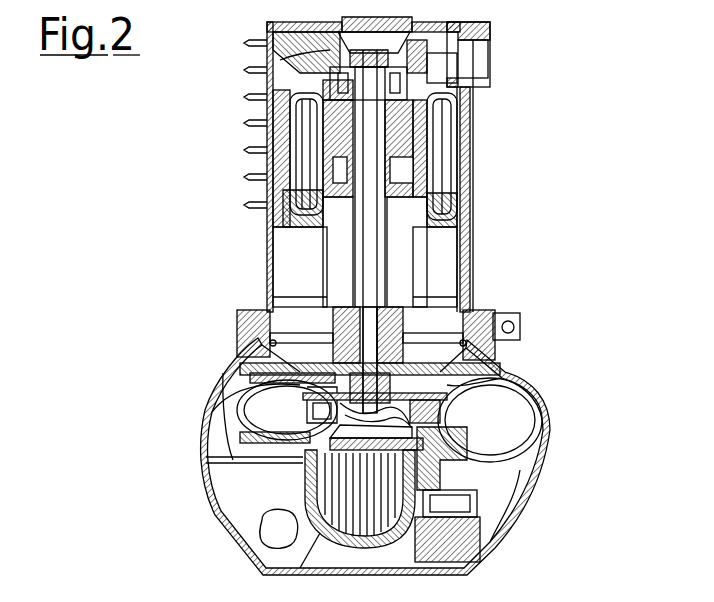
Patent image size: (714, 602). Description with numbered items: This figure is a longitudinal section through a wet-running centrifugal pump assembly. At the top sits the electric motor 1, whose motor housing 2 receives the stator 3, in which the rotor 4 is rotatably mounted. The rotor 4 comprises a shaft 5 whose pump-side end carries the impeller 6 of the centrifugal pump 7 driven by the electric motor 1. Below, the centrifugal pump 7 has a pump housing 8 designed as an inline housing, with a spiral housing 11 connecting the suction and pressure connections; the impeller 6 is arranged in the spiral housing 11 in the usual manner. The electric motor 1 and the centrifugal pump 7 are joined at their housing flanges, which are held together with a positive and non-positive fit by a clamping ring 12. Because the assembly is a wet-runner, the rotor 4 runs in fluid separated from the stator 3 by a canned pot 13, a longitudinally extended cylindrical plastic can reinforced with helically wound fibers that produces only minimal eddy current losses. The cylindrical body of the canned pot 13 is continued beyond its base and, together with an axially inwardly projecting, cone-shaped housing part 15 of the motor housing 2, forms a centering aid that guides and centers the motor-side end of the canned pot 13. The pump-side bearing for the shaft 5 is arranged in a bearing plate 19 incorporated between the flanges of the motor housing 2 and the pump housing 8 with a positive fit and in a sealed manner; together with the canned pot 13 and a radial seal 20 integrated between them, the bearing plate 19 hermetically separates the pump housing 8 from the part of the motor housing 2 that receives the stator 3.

The electric motor 1 is at (430, 164).
The motor housing 2 is at (472, 218).
The stator 3 is at (470, 178).
The rotor 4 is at (470, 122).
The shaft 5 is at (470, 247).
The impeller 6 is at (515, 370).
The centrifugal pump 7 is at (568, 408).
The pump housing 8 is at (528, 492).
The spiral housing 11 is at (540, 443).
The clamping ring 12 is at (240, 325).
The canned pot 13 is at (340, 262).
The cone-shaped housing part 15 is at (312, 67).
The bearing plate 19 is at (215, 362).
The radial seal 20 is at (470, 300).